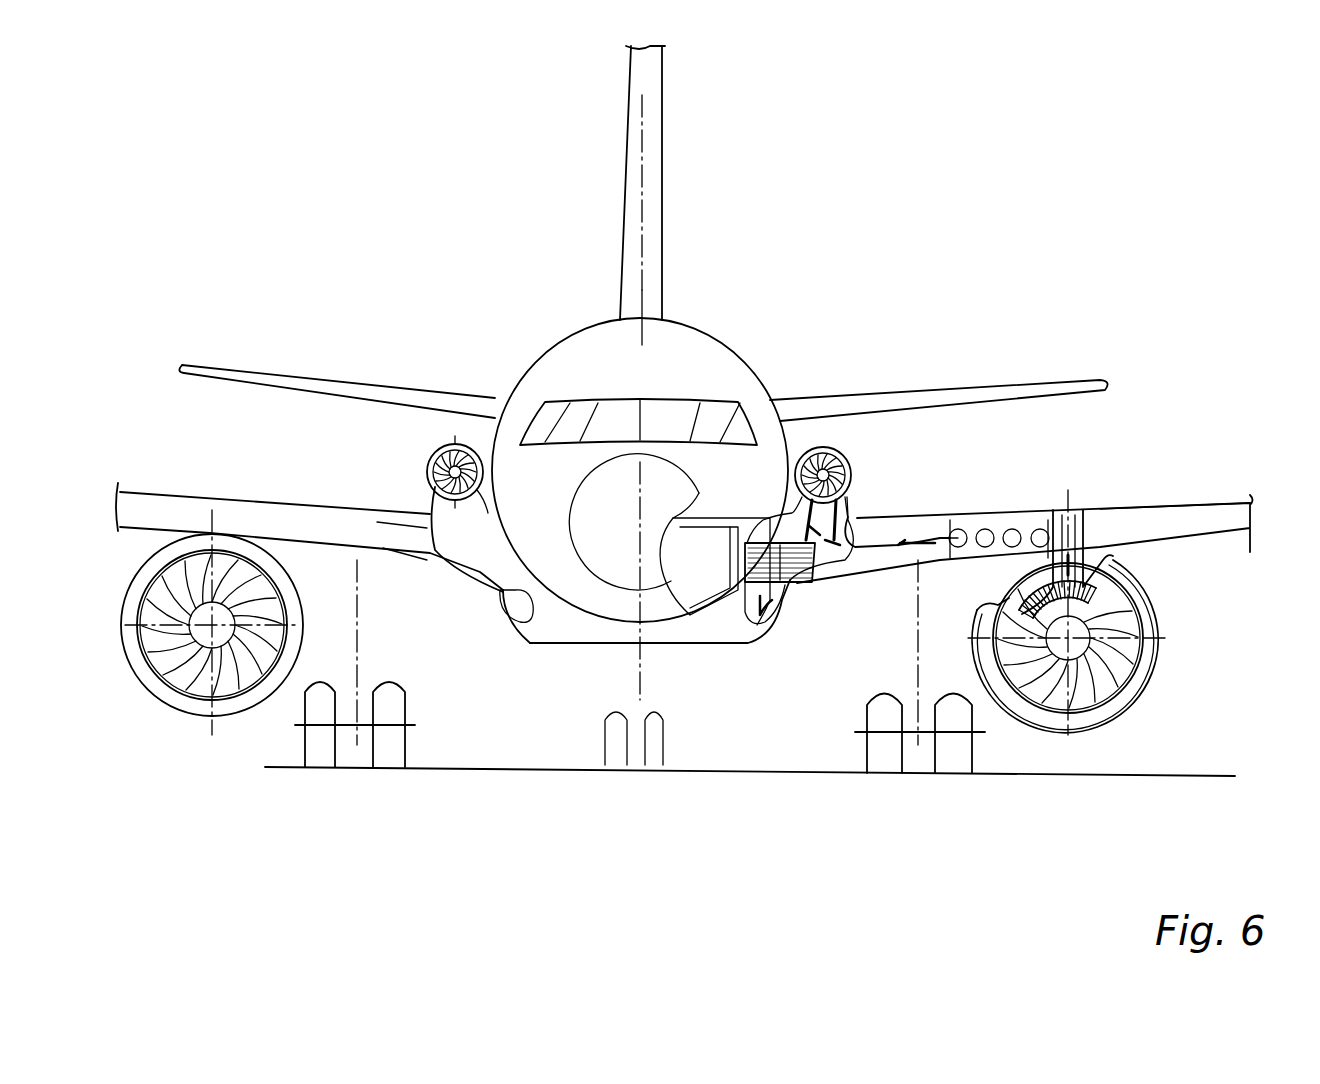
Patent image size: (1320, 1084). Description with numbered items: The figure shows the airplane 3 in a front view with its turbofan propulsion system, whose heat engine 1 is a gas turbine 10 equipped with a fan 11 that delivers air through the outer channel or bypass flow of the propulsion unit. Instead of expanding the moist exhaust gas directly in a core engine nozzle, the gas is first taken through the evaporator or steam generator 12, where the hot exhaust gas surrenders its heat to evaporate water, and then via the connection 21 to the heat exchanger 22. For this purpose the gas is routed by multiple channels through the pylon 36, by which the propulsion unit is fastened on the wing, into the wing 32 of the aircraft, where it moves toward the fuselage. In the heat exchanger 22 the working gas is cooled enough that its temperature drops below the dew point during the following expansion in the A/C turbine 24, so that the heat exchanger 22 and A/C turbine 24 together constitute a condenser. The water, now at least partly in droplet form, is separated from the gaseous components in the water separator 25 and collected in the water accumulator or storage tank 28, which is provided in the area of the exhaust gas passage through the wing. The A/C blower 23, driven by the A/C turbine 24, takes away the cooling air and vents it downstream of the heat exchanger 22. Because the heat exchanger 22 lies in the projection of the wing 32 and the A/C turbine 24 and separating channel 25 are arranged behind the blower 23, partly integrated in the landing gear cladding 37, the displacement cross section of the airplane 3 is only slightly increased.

The heat engine 1 is at (1163, 622).
The airplane 3 is at (756, 311).
The gas turbine 10 is at (1150, 692).
The fan 11 is at (1085, 720).
The evaporator 12 is at (1022, 610).
The connection 21 is at (898, 545).
The heat exchanger 22 is at (795, 580).
The A/C blower 23 is at (863, 484).
The A/C turbine 24 is at (863, 484).
The water separator 25 is at (855, 462).
The water accumulator 28 is at (997, 525).
The wing 32 is at (1138, 507).
The pylon 36 is at (1090, 570).
The landing gear cladding 37 is at (750, 648).